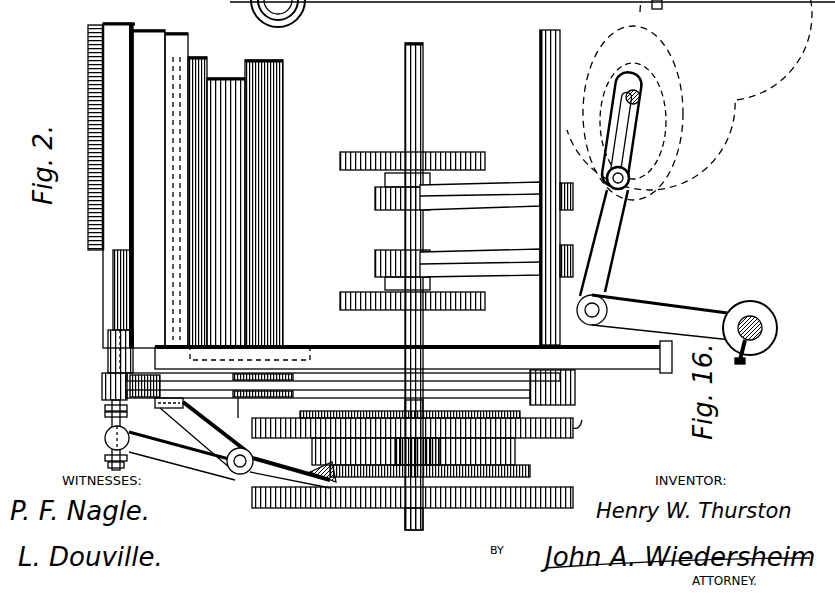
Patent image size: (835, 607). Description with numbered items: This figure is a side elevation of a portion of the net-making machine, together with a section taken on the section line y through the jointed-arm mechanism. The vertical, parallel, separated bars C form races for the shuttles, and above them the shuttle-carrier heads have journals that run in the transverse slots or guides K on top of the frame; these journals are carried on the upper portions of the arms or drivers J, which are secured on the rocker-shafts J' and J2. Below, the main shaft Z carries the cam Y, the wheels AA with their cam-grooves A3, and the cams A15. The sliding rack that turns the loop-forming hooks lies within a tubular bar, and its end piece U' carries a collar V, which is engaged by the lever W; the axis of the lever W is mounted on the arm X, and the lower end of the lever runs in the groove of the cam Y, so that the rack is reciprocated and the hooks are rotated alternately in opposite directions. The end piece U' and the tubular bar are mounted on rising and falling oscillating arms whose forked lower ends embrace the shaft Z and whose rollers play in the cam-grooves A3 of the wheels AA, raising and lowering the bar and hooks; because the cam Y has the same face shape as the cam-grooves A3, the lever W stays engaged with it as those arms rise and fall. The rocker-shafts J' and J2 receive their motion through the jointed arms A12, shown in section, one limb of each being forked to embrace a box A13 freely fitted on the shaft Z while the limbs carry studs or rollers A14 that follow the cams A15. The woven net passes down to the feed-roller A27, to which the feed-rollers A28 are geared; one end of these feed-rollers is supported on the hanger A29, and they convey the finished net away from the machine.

In FIG. 2, the parallel separated bars C is at (86, 137).
In FIG. 2, the feed-rollers A28 is at (200, 60).
In FIG. 2, the feed-roller A27 is at (226, 82).
In FIG. 2, the hanger A29 is at (292, 345).
In FIG. 2, the slots or guides K is at (110, 351).
In FIG. 2, the cam-grooves A3 is at (350, 395).
In FIG. 2, the end piece U' is at (92, 421).
In FIG. 2, the collar V is at (104, 444).
In FIG. 2, the lever W is at (184, 457).
In FIG. 2, the arm X is at (242, 443).
In FIG. 2, the arms or drivers J is at (229, 417).
In FIG. 2, the shaft Z is at (398, 302).
In FIG. 2, the cams A15 is at (366, 152).
In FIG. 2, the section line y is at (475, 222).
In FIG. 2, the rocker-shaft J2 is at (540, 105).
In FIG. 2, the jointed arms A12 is at (520, 200).
In FIG. 16, the jointed arms A12 is at (636, 312).
In FIG. 2, the cam Y is at (500, 455).
In FIG. 2, the wheels AA is at (584, 433).
In FIG. 16, the box A13 is at (634, 80).
In FIG. 16, the studs or rollers A14 is at (606, 180).
In FIG. 16, the rocker-shaft J' is at (750, 322).